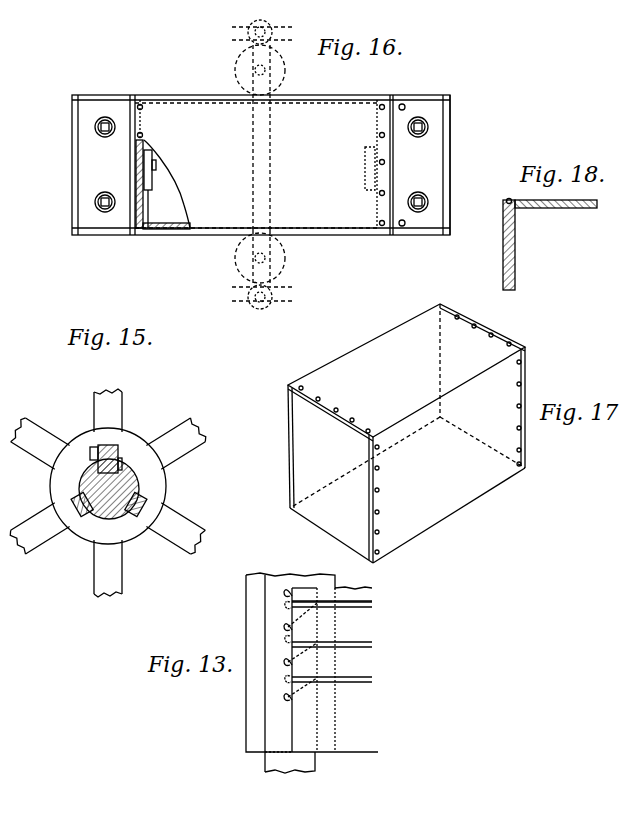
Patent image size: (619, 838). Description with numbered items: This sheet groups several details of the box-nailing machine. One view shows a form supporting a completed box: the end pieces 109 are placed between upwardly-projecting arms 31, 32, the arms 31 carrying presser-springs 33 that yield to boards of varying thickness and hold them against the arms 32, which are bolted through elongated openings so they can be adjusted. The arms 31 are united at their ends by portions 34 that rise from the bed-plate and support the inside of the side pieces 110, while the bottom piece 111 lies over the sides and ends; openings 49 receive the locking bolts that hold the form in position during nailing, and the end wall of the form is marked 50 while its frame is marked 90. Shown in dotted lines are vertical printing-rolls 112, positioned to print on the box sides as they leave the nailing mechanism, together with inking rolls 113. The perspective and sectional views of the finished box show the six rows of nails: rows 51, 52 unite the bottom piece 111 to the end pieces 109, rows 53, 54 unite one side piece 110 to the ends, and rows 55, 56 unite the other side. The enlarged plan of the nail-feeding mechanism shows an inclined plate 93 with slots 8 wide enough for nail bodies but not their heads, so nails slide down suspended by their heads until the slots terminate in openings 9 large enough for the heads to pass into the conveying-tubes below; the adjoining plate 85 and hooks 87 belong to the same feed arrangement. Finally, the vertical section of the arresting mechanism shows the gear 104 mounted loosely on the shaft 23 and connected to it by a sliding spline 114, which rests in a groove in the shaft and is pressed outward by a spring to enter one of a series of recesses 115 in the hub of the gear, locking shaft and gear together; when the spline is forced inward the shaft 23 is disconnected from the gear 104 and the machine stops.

In FIG. 13, the slots 8 is at (364, 642).
In FIG. 13, the openings 9 is at (284, 604).
In FIG. 15, the shaft 23 is at (109, 489).
In FIG. 16, the arms 31 is at (149, 212).
In FIG. 16, the arms 32 is at (130, 162).
In FIG. 16, the presser-springs 33 is at (152, 180).
In FIG. 16, the portions 34 is at (174, 228).
In FIG. 16, the openings 49 is at (405, 108).
In FIG. 16, the end wall 50 is at (450, 160).
In FIG. 18, the row of nails 51 is at (513, 194).
In FIG. 17, the row of nails 51 is at (336, 413).
In FIG. 17, the row of nails 52 is at (478, 333).
In FIG. 17, the row of nails 53 is at (379, 491).
In FIG. 17, the row of nails 54 is at (517, 385).
In FIG. 17, the row of nails 55 is at (288, 450).
In FIG. 17, the row of nails 56 is at (440, 352).
In FIG. 13, the plate 85 is at (290, 674).
In FIG. 13, the hook 87 is at (284, 628).
In FIG. 16, the frame 90 is at (72, 176).
In FIG. 13, the inclined plates 93 is at (312, 662).
In FIG. 15, the gear 104 is at (50, 444).
In FIG. 16, the end pieces 109 is at (136, 214).
In FIG. 18, the end pieces 109 is at (520, 245).
In FIG. 17, the end pieces 109 is at (484, 437).
In FIG. 16, the side pieces 110 is at (338, 100).
In FIG. 17, the side pieces 110 is at (335, 480).
In FIG. 16, the bottom piece 111 is at (256, 165).
In FIG. 18, the bottom piece 111 is at (556, 213).
In FIG. 17, the bottom piece 111 is at (406, 370).
In FIG. 16, the printing-rolls 112 is at (284, 72).
In FIG. 16, the inking rolls 113 is at (264, 27).
In FIG. 15, the sliding spline 114 is at (104, 448).
In FIG. 15, the recesses 115 is at (122, 452).